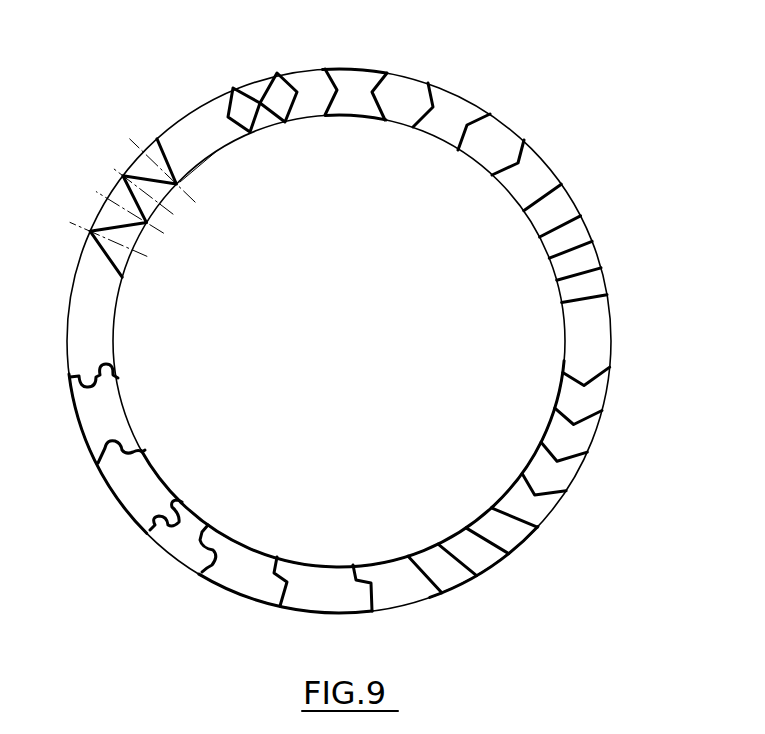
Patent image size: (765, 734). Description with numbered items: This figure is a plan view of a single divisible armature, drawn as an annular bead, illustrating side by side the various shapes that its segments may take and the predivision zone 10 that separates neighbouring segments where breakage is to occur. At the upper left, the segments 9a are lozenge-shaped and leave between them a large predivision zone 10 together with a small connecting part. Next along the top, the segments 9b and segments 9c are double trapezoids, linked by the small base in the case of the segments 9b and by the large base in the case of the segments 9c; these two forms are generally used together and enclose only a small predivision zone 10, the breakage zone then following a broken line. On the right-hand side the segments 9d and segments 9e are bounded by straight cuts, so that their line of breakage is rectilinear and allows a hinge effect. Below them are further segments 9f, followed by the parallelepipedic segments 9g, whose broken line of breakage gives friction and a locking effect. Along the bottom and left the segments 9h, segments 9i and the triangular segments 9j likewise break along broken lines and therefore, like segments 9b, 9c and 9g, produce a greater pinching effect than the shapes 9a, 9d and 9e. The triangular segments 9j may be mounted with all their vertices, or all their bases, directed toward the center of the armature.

The predivision zone 10 is at (612, 327).
The lozenge-shaped segments 9a is at (226, 102).
The double-trapezoid segments linked by the small base 9b is at (354, 72).
The double-trapezoid segments linked by the large base 9c is at (400, 82).
The segments 9d is at (562, 203).
The segments 9e is at (578, 232).
The joint pattern (angled chevrons) 9f is at (595, 393).
The parallelepipedic segments 9g is at (487, 552).
The segments 9h is at (327, 597).
The segments 9i is at (125, 488).
The triangular shaped segments 9j is at (105, 215).